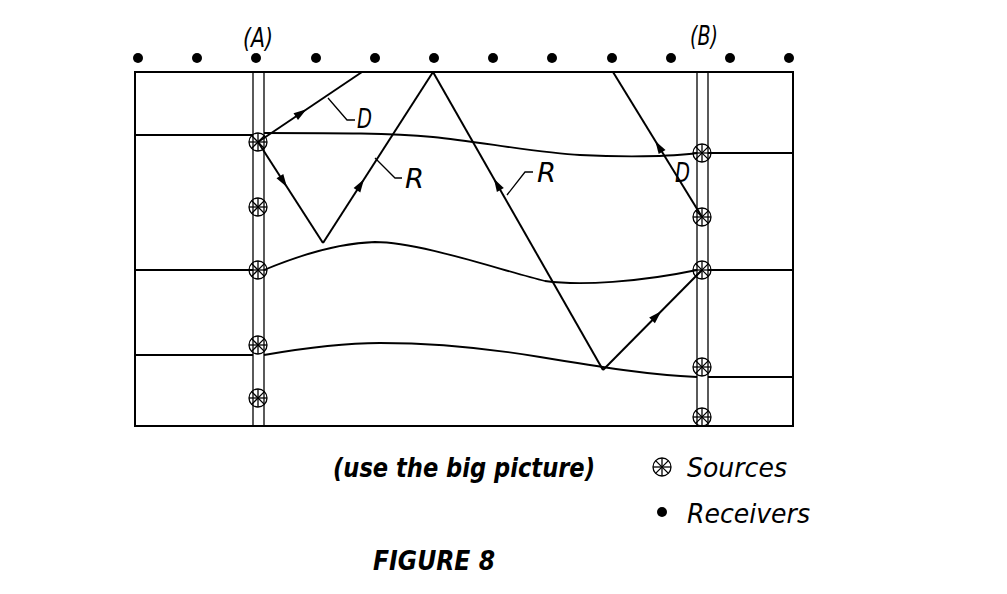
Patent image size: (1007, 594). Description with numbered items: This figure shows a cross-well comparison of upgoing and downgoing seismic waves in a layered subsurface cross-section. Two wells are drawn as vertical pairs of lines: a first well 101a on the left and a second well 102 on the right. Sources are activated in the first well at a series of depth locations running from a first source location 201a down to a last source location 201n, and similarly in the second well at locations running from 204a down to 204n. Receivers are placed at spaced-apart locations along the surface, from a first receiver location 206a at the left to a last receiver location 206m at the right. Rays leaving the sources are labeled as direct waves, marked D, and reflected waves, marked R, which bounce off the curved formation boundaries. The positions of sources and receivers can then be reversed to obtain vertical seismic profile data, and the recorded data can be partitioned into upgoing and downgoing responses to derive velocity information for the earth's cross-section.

The receiver location 206a is at (94, 68).
The receiver location 206m is at (836, 40).
The first source in second well 204a is at (785, 121).
The last source in second well 204n is at (787, 390).
The source location 201a is at (214, 158).
The source location 201n is at (197, 399).
The first well 101a is at (214, 249).
The second well 102 is at (739, 249).